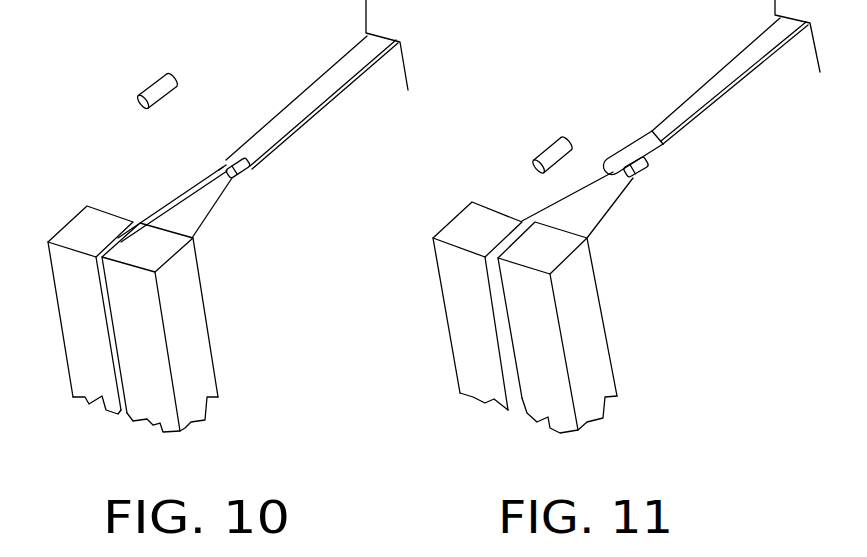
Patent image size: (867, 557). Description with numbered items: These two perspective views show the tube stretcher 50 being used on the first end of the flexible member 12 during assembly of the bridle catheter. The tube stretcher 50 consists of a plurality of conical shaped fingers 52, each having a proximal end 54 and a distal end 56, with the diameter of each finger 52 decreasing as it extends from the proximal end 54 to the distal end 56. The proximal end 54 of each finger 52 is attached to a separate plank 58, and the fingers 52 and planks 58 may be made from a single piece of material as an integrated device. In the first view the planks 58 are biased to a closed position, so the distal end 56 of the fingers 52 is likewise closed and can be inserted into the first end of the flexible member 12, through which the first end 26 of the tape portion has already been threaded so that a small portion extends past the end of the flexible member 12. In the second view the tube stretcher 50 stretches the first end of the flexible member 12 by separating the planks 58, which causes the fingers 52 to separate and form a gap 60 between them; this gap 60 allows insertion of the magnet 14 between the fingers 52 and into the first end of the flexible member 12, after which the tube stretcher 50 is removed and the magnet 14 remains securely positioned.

In FIG. 10, the flexible member 12 is at (325, 100).
In FIG. 11, the flexible member 12 is at (730, 75).
In FIG. 10, the magnet 14 is at (143, 90).
In FIG. 11, the magnet 14 is at (547, 152).
In FIG. 10, the first end of the tape portion 26 is at (243, 173).
In FIG. 11, the first end of the tape portion 26 is at (638, 172).
In FIG. 10, the tube stretcher 50 is at (184, 341).
In FIG. 11, the tube stretcher 50 is at (478, 338).
In FIG. 10, the conical shaped fingers 52 is at (203, 218).
In FIG. 10, the proximal end 54 is at (152, 208).
In FIG. 10, the distal end 56 is at (222, 168).
In FIG. 10, the plank 58 is at (158, 424).
In FIG. 11, the plank 58 is at (552, 403).
In FIG. 11, the gap 60 is at (560, 203).